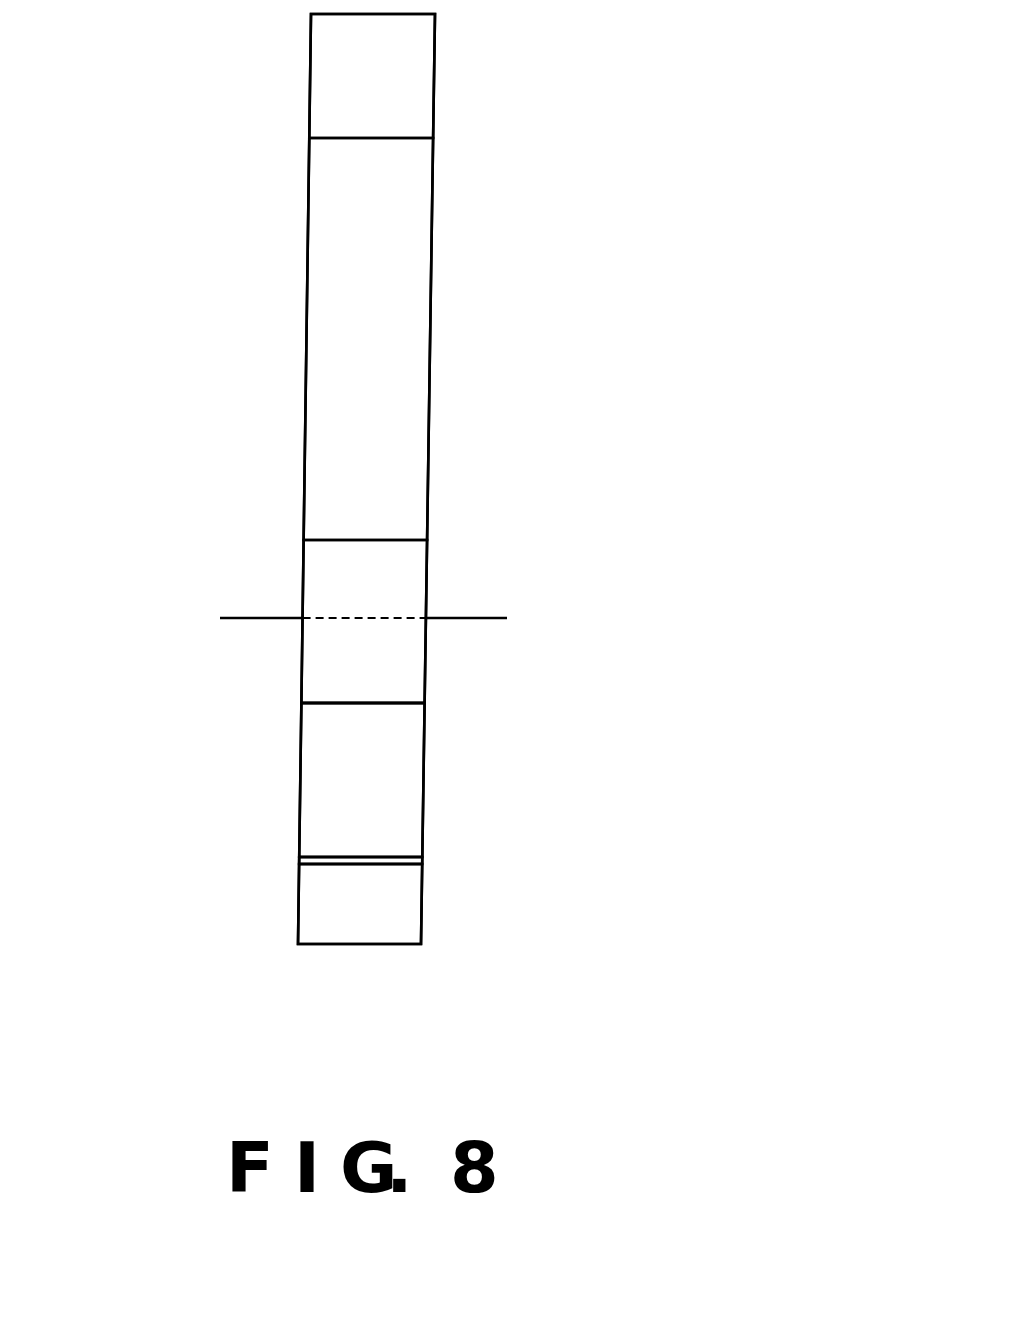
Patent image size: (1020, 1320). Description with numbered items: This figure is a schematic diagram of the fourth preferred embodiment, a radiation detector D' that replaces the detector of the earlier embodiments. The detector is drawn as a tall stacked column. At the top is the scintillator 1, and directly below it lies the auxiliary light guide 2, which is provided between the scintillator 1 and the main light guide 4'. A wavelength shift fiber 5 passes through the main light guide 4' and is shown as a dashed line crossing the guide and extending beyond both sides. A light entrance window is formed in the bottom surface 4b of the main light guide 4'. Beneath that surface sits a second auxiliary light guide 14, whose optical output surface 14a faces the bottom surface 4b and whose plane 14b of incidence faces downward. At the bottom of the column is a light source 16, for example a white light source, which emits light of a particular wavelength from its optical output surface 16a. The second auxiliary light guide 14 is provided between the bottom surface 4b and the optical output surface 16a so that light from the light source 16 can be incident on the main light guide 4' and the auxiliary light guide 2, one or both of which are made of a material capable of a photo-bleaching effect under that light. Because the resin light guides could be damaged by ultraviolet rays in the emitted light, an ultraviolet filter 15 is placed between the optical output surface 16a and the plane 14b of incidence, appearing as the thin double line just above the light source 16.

The scintillator 1 is at (423, 80).
The auxiliary light guide 2 is at (417, 278).
The main light guide 4' is at (410, 586).
The bottom surface of the main light guide 4b is at (310, 703).
The wavelength shift fiber 5 is at (492, 618).
The second auxiliary light guide 14 is at (389, 767).
The optical output surface 14a is at (378, 703).
The plane of incidence 14b is at (320, 860).
The ultraviolet filter 15 is at (420, 858).
The light source 16 is at (413, 930).
The optical output surface of the light source 16a is at (350, 858).
The radiation detector D' is at (495, 479).